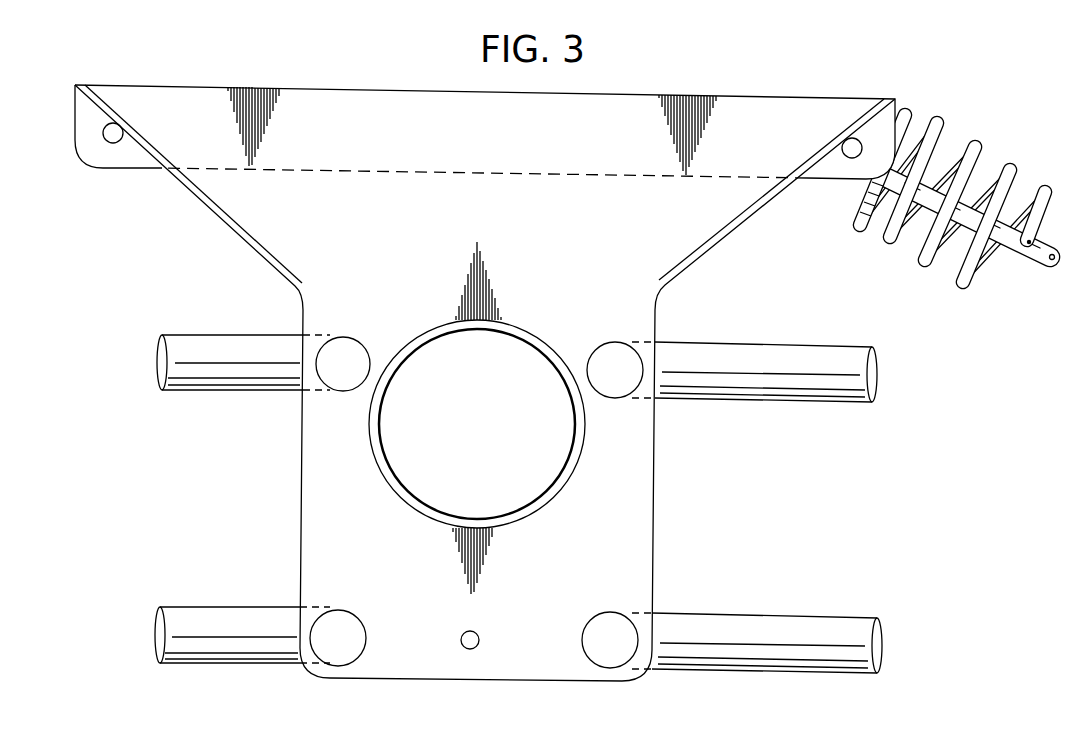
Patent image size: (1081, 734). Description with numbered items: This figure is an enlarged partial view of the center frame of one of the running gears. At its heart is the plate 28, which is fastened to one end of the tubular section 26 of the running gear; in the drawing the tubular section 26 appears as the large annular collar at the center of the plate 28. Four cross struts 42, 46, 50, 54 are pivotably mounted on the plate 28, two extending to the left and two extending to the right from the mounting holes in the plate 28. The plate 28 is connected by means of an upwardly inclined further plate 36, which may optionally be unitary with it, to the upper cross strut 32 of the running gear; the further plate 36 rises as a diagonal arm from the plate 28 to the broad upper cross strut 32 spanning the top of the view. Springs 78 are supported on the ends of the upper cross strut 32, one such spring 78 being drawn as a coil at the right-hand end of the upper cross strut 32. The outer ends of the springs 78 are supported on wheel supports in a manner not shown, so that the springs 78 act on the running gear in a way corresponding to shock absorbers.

The tubular section 26 is at (530, 512).
The plate 28 is at (517, 663).
The upper cross strut 32 is at (843, 168).
The further plate 36 is at (223, 202).
The cross strut 42 is at (758, 352).
The cross strut 46 is at (755, 627).
The cross strut 50 is at (227, 343).
The cross strut 54 is at (222, 622).
The spring 78 is at (927, 262).